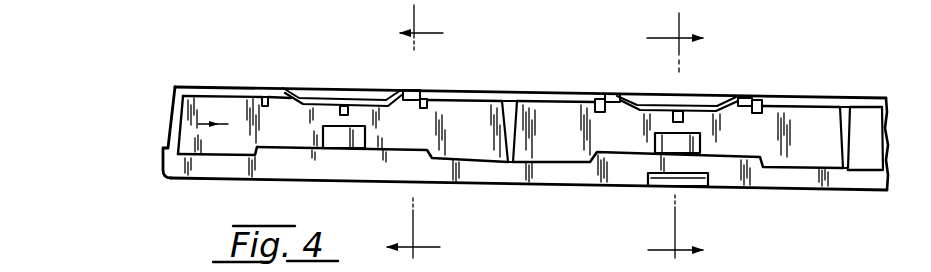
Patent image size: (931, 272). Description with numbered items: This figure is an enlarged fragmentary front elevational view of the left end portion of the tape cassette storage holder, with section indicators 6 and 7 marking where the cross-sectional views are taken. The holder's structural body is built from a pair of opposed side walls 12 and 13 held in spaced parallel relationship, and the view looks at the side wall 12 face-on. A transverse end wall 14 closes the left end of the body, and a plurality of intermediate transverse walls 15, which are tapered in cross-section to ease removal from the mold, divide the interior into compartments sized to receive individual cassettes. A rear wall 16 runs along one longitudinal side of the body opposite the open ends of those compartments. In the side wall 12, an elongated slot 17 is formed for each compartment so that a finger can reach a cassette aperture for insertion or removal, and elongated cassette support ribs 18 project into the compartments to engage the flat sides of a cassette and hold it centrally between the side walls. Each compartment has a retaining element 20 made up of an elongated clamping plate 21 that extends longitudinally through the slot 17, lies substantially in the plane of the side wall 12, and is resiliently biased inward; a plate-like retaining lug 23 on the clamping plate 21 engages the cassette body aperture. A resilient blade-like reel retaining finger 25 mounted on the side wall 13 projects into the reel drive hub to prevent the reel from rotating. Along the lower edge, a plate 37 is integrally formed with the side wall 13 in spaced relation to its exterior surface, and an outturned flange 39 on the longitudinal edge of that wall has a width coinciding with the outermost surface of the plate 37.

The side wall 12 is at (218, 86).
The side wall 13 is at (230, 153).
The end wall 14 is at (173, 98).
The intermediate transverse wall 15 is at (517, 124).
The rear wall 16 is at (223, 125).
The elongated slot 17 is at (275, 92).
The cassette support rib 18 is at (267, 101).
The retaining element 20 is at (341, 82).
The clamping plate 21 is at (400, 96).
The retaining lug 23 is at (342, 112).
The reel retaining finger 25 is at (355, 138).
The plate 37 is at (697, 182).
The outturned flange 39 is at (441, 176).
The section line 6- 6 is at (414, 131).
The section line 7- 7 is at (675, 135).